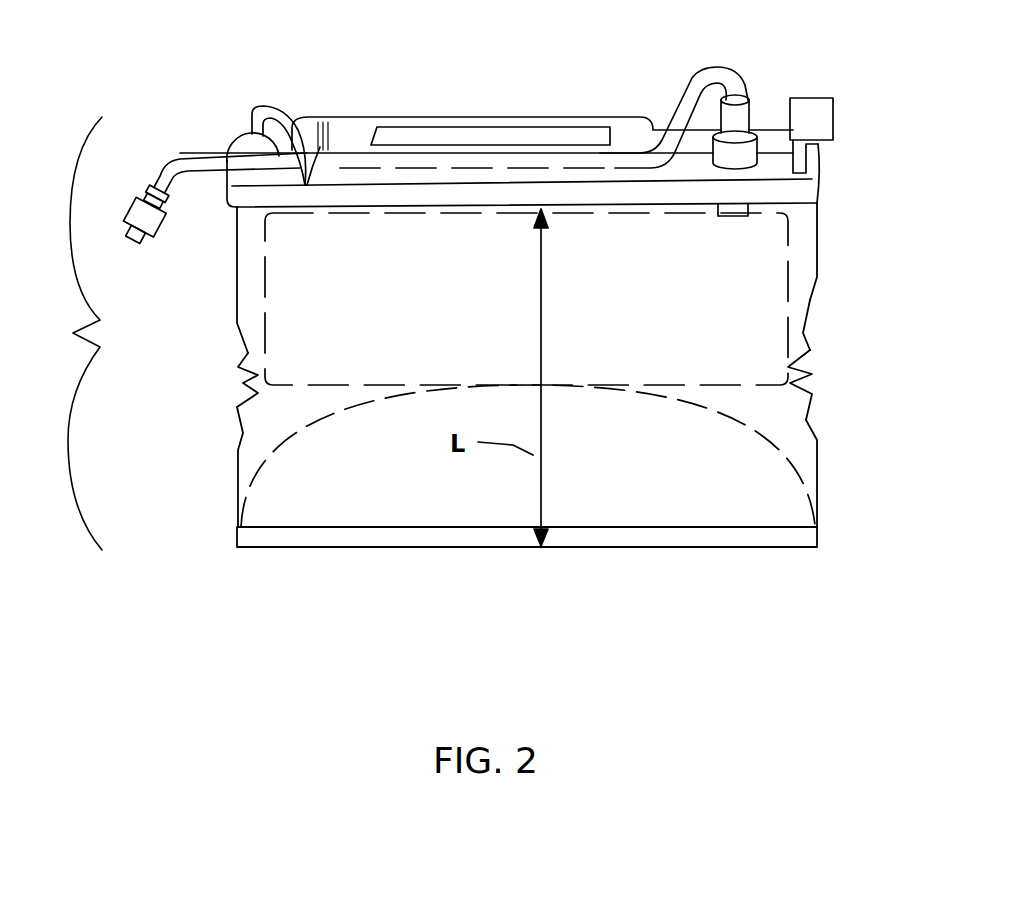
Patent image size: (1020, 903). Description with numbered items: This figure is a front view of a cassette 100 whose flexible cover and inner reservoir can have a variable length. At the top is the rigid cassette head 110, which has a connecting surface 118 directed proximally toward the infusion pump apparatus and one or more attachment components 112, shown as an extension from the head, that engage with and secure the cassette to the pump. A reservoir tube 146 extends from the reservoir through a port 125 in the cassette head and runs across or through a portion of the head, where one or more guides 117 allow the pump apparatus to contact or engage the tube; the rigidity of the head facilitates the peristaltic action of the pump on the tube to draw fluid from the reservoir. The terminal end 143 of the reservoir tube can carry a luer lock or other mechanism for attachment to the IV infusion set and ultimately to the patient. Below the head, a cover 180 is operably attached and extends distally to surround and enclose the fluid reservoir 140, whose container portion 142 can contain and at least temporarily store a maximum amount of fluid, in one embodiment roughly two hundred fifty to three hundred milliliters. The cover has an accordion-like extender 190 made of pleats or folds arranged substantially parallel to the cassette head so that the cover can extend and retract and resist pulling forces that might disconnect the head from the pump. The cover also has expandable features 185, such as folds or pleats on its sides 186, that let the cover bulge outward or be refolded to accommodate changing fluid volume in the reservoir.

The cassette 100 is at (65, 333).
The cassette head 110 is at (820, 170).
The attachment component 112 is at (817, 113).
The guide 117 is at (477, 133).
The connecting surface 118 is at (252, 145).
The port 125 is at (742, 113).
The fluid reservoir 140 is at (787, 277).
The container portion 142 is at (767, 333).
The terminal end 143 is at (153, 222).
The reservoir tube 146 is at (205, 160).
The cover 180 is at (238, 473).
The expandable feature 185 is at (730, 473).
The side 186 is at (817, 233).
The extender 190 is at (242, 383).